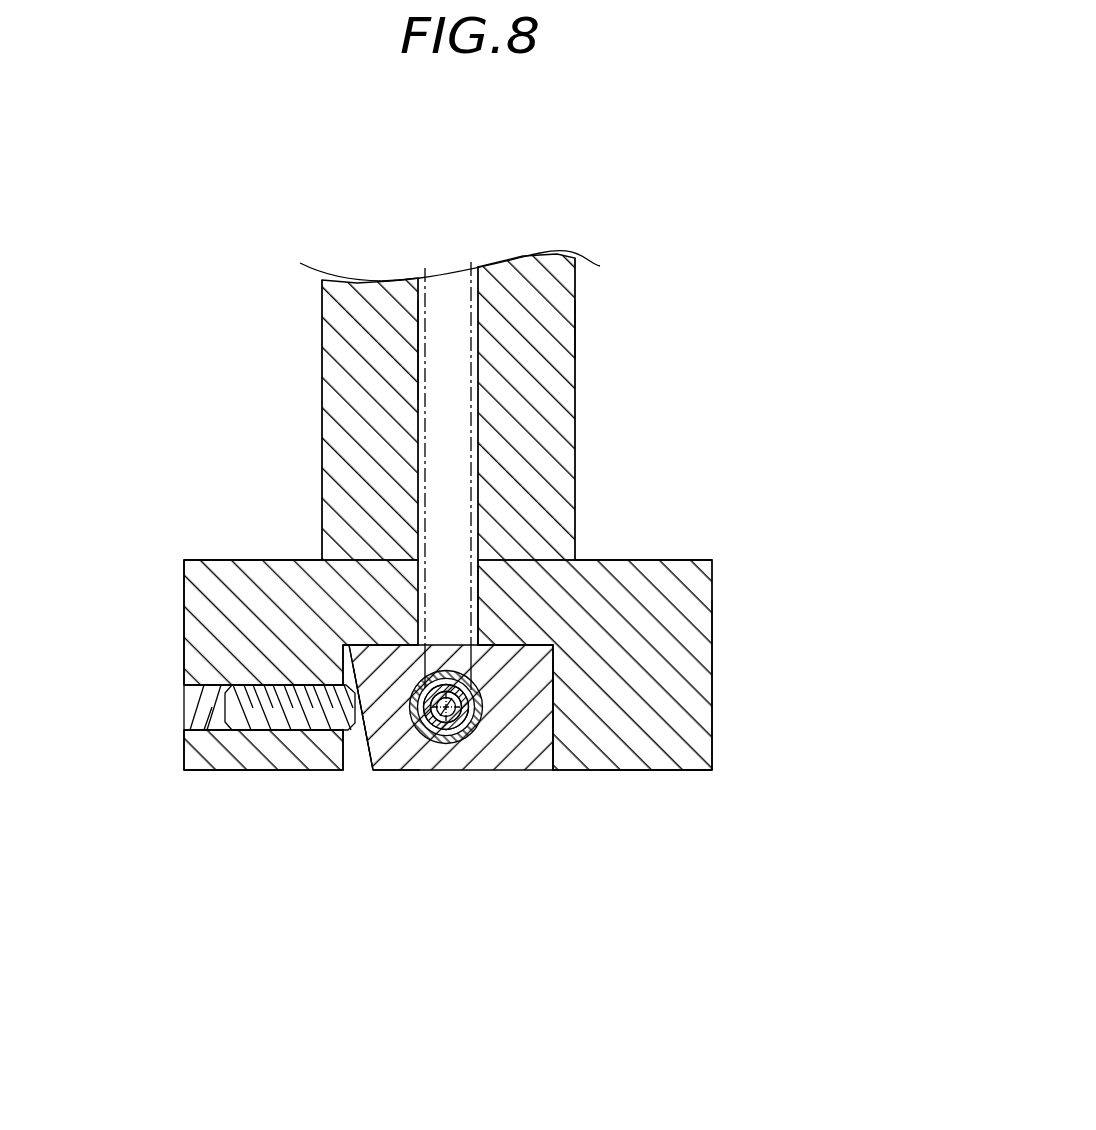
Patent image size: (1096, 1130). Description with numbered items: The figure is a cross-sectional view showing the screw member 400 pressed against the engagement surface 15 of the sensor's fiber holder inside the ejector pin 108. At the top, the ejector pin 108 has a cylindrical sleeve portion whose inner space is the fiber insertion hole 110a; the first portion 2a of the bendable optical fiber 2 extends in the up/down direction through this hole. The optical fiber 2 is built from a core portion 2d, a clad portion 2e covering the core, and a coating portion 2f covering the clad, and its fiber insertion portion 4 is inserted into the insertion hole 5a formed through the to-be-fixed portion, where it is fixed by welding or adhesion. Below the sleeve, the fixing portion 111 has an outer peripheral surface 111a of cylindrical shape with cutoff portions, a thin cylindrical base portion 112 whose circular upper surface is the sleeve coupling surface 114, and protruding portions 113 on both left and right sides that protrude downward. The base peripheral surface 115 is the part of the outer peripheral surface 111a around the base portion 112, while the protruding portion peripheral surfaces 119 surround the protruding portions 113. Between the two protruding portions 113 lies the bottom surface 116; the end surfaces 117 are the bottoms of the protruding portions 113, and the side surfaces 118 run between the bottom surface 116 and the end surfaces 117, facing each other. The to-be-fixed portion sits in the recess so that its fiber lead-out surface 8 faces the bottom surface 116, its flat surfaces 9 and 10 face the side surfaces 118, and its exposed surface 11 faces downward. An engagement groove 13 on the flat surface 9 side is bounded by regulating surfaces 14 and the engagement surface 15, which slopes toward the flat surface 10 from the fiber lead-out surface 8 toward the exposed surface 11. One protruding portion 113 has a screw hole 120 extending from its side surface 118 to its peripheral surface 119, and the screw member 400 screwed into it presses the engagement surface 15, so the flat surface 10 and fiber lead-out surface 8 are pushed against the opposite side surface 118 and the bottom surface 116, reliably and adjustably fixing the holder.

The optical fiber 2 is at (448, 745).
The first portion 2a is at (418, 333).
The core portion 2d is at (465, 743).
The clad portion 2e is at (425, 727).
The coating portion 2f is at (430, 743).
The fiber insertion portion 4 is at (420, 738).
The insertion hole 5a is at (492, 720).
The fiber lead-out surface 8 is at (533, 642).
The flat surface 9 is at (343, 673).
The flat surface 10 is at (548, 724).
The exposed surface 11 is at (470, 738).
The engagement groove 13 is at (349, 758).
The regulating surfaces 14 is at (372, 760).
The engagement surface 15 is at (353, 758).
The ejector pin 108 is at (563, 331).
The fiber insertion hole 110a is at (478, 312).
The fixing portion 111 is at (568, 388).
The outer peripheral surface 111a is at (717, 653).
The base portion 112 is at (700, 592).
The protruding portions 113 is at (207, 762).
The sleeve coupling surface 114 is at (252, 560).
The base peripheral surface 115 is at (184, 584).
The bottom surface 116 is at (500, 667).
The end surfaces 117 is at (240, 770).
The side surfaces 118 is at (354, 745).
The protruding portion peripheral surfaces 119 is at (184, 747).
The screw hole 120 is at (184, 699).
The screw member 400 is at (278, 722).